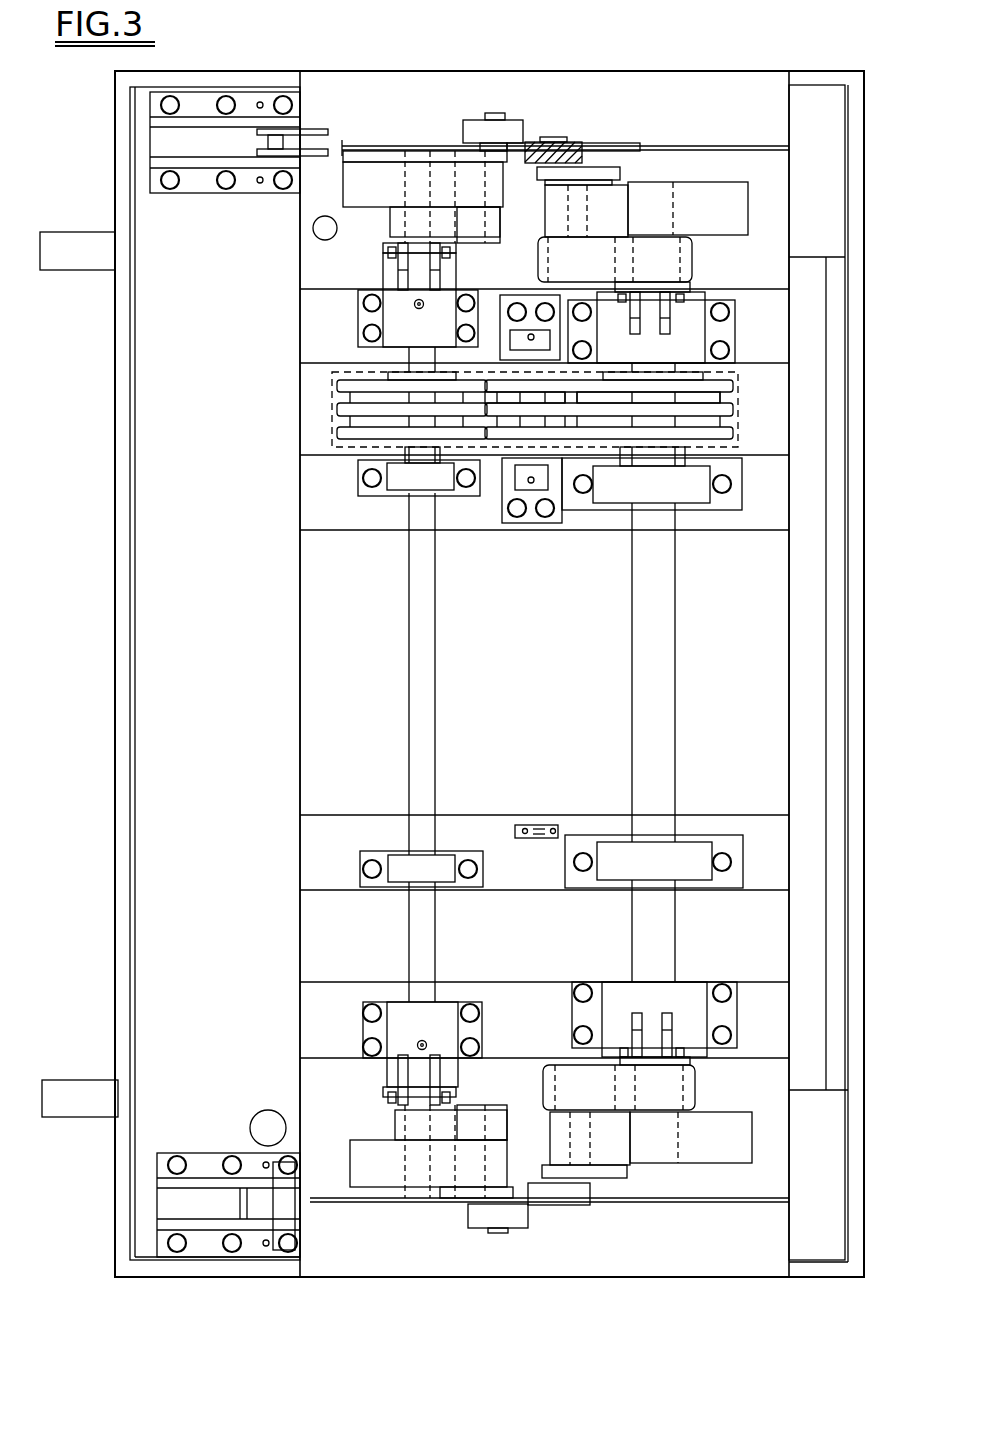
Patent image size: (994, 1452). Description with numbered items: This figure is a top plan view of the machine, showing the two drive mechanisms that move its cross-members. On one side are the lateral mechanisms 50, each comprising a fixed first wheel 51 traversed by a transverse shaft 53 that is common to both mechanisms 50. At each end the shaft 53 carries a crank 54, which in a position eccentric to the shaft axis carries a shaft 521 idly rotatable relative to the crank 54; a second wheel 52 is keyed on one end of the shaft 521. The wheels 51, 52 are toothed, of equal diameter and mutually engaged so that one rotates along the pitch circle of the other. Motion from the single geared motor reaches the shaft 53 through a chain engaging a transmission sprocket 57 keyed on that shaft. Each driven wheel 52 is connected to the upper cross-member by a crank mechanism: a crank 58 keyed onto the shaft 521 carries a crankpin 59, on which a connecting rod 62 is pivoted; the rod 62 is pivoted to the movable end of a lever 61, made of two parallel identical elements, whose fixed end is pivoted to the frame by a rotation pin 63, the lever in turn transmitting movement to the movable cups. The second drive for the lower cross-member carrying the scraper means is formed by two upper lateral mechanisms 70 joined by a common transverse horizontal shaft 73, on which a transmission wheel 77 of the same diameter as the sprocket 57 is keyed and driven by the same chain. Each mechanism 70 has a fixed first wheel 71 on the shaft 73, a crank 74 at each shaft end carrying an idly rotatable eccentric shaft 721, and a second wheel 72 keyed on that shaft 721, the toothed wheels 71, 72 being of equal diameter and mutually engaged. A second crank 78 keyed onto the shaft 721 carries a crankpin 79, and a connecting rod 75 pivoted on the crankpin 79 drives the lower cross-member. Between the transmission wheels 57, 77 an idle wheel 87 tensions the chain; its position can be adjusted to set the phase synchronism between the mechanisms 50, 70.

The lateral mechanism 50 is at (755, 217).
The fixed first wheel 51 is at (685, 262).
The second wheel 52 is at (543, 1092).
The shaft 521 is at (600, 210).
The transverse shaft 53 is at (672, 681).
The crank 54 is at (712, 190).
The transmission sprocket 57 is at (730, 410).
The crank 58 is at (620, 170).
The crankpin 59 is at (553, 142).
The lever 61 is at (325, 130).
The connecting rod 62 is at (560, 137).
The rotation pin 63 is at (268, 142).
The upper lateral mechanism 70 is at (383, 152).
The fixed first wheel 71 is at (390, 230).
The second wheel 72 is at (462, 1120).
The shaft 721 is at (475, 175).
The transverse horizontal shaft 73 is at (435, 662).
The crank 74 is at (395, 1140).
The connecting rod 75 is at (518, 143).
The transmission wheel 77 is at (350, 403).
The second crank 78 is at (410, 150).
The crankpin 79 is at (492, 118).
The idle wheel 87 is at (498, 440).